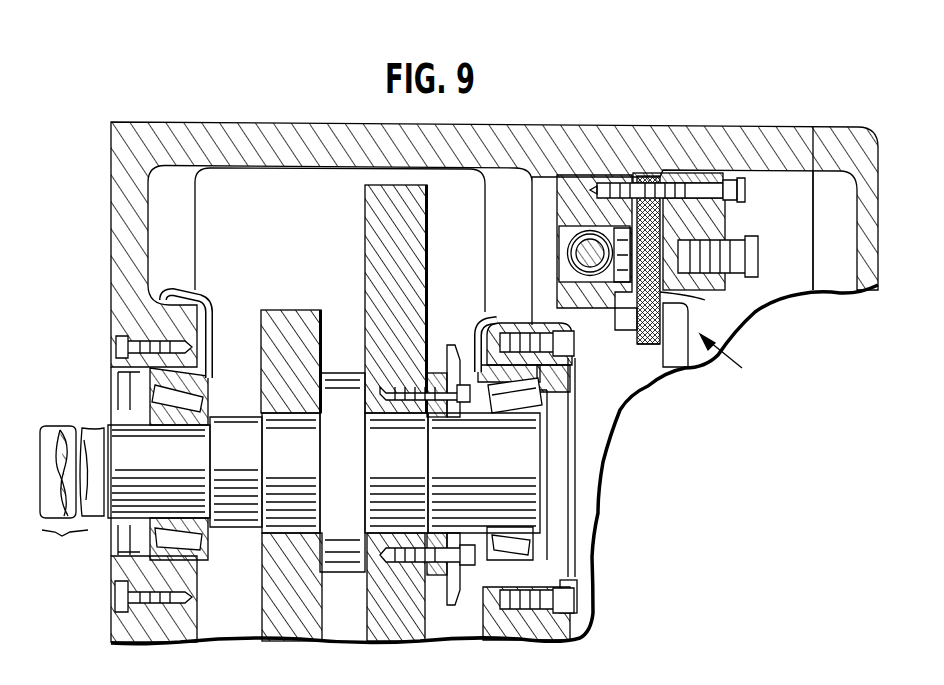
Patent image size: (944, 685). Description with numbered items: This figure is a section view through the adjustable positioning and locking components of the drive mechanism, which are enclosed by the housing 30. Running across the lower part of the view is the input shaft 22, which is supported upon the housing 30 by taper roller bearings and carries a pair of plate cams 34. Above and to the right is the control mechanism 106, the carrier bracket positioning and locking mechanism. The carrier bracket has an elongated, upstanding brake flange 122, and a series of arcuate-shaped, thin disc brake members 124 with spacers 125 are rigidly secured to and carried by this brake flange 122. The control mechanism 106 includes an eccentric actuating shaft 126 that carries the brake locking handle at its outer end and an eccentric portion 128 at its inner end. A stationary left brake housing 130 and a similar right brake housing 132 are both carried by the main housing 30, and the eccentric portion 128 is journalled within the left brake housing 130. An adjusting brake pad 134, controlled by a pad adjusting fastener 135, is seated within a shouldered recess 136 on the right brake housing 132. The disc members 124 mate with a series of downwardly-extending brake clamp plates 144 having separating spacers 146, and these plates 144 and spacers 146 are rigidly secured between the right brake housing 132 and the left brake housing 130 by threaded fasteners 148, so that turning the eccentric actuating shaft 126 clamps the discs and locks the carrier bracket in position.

The input shaft 22 is at (55, 428).
The housing 30 is at (245, 130).
The plate cams 34 is at (290, 310).
The control mechanism 106 is at (736, 362).
The brake flange 122 is at (680, 357).
The disc brake members 124 is at (632, 318).
The spacers 125 is at (630, 348).
The eccentric actuating shaft 126 is at (582, 255).
The eccentric portion 128 is at (600, 232).
The left brake housing 130 is at (560, 186).
The right brake housing 132 is at (690, 182).
The adjusting brake pad 134 is at (710, 298).
The pad adjusting fastener 135 is at (735, 240).
The shouldered recess 136 is at (790, 170).
The brake clamp plates 144 is at (704, 175).
The separating spacers 146 is at (628, 178).
The threaded fasteners 148 is at (733, 182).